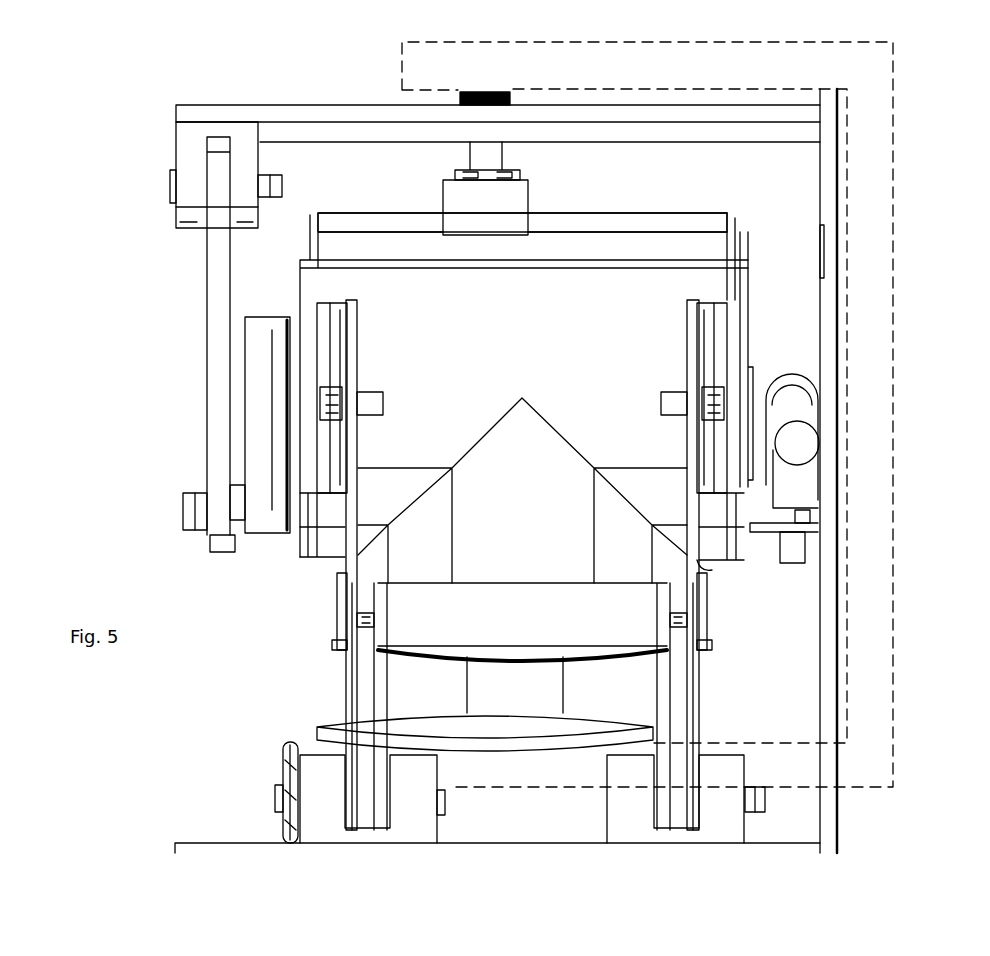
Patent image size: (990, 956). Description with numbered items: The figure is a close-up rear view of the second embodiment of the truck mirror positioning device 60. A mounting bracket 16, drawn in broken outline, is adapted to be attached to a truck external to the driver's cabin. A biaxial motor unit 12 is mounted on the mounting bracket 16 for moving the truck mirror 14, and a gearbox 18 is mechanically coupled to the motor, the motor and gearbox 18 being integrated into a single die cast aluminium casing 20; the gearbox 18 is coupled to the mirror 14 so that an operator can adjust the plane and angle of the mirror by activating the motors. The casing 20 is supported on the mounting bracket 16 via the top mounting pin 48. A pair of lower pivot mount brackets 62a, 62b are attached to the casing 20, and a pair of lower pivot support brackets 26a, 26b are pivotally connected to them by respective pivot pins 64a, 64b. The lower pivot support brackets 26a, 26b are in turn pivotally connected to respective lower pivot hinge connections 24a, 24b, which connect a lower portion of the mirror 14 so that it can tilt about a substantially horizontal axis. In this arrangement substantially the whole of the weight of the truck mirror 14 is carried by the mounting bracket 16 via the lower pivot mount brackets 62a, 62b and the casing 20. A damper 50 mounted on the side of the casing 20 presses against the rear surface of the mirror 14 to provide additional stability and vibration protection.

The truck mirror positioning device 60 is at (128, 298).
The biaxial motor unit 12 is at (357, 210).
The top mounting pin 48 is at (503, 148).
The casing 20 is at (688, 210).
The mounting bracket 16 is at (893, 213).
The damper 50 is at (792, 378).
The lower pivot mount bracket 62a is at (363, 352).
The lower pivot mount bracket 62b is at (690, 345).
The pivot pin 64a is at (385, 400).
The pivot pin 64b is at (664, 398).
The lower pivot support bracket 26a is at (365, 450).
The lower pivot support bracket 26b is at (688, 445).
The gearbox 18 is at (705, 567).
The lower pivot hinge connection 24a is at (268, 770).
The lower pivot hinge connection 24b is at (752, 758).
The truck mirror 14 is at (222, 843).